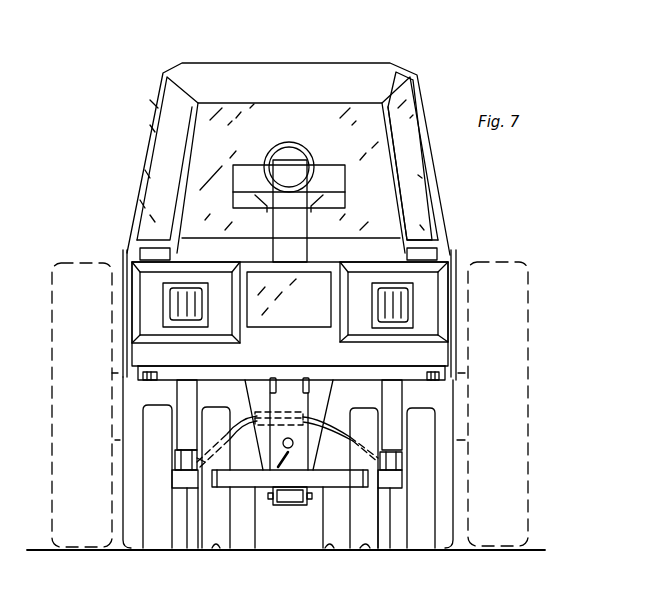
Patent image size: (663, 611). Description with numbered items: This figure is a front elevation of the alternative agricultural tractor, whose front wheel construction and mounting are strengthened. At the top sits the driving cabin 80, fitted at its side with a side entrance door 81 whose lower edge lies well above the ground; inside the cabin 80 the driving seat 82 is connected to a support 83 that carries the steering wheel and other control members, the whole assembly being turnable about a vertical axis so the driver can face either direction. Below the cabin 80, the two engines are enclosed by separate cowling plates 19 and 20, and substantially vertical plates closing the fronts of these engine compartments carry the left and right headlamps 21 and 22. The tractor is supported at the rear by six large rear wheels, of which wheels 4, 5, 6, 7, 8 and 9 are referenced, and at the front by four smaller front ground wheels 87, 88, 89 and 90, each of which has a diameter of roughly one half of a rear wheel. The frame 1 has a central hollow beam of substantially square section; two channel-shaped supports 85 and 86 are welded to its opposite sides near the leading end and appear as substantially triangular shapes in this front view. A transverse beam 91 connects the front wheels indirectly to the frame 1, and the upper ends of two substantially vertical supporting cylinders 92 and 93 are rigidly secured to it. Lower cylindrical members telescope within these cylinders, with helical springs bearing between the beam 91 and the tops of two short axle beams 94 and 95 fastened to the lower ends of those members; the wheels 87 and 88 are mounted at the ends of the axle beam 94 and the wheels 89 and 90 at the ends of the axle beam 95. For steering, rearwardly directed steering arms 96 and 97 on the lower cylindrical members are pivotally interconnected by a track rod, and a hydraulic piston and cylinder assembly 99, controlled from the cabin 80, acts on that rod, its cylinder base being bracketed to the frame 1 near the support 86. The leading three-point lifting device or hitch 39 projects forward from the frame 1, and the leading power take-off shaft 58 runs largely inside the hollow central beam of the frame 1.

The driving cabin 80 is at (344, 61).
The side entrance door 81 is at (413, 173).
The driving seat 82 is at (340, 160).
The support 83 is at (300, 233).
The cowling plates 20 is at (132, 285).
The right headlamp 22 is at (172, 305).
The cowling plates 19 is at (430, 302).
The left headlamp 21 is at (289, 299).
The rear wheel 9 is at (57, 278).
The rear wheel 4 is at (517, 315).
The beam 91 is at (258, 367).
The support 85 is at (294, 366).
The support 86 is at (270, 408).
The supporting cylinder 93 is at (177, 393).
The supporting cylinder 92 is at (400, 397).
The rear wheel 8 is at (127, 403).
The front ground wheel 90 is at (147, 447).
The front ground wheel 87 is at (440, 427).
The rear wheel 5 is at (447, 473).
The steering arm 97 is at (216, 477).
The steering arm 96 is at (322, 420).
The hydraulic piston and cylinder assembly 99 is at (287, 439).
The leading power take-off shaft 58 is at (294, 446).
The leading three-point lifting device or hitch 39 is at (340, 490).
The axle beam 95 is at (180, 478).
The frame 1 is at (278, 465).
The rear wheel 7 is at (242, 543).
The axle beam 94 is at (404, 520).
The front ground wheel 89 is at (217, 540).
The rear wheel 6 is at (342, 548).
The front ground wheel 88 is at (367, 547).